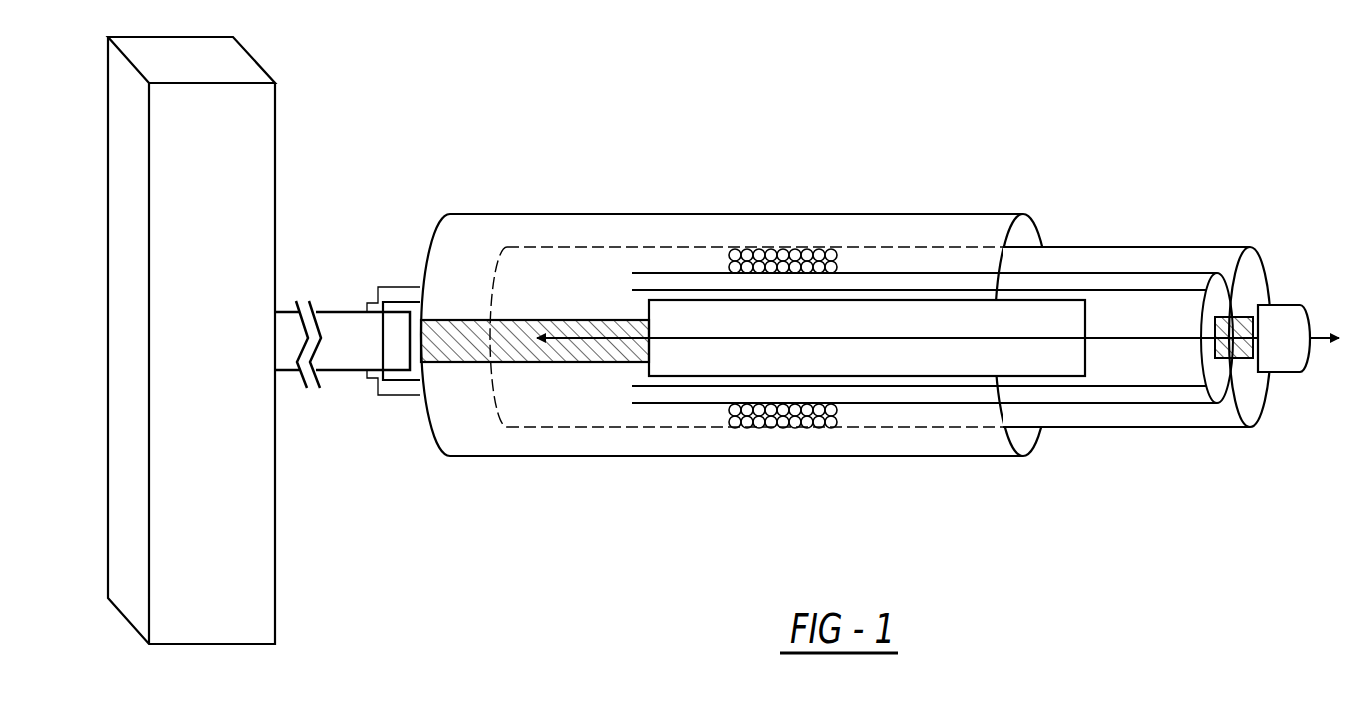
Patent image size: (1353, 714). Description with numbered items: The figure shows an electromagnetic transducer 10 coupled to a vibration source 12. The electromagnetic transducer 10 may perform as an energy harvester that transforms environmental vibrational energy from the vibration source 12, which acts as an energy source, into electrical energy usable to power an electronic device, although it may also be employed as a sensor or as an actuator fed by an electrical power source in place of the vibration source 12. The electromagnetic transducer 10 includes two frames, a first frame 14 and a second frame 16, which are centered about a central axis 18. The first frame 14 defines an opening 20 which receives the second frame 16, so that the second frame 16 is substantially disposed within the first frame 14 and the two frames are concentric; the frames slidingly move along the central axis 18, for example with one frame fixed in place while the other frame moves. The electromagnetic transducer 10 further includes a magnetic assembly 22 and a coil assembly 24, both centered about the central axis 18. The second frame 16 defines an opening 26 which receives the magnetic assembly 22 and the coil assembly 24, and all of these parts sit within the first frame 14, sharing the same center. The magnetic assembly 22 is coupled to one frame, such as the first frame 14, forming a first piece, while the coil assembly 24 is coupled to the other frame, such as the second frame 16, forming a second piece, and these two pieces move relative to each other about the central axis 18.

The electromagnetic transducer 10 is at (859, 338).
The vibration source 12 is at (122, 145).
The first frame 14 is at (610, 214).
The second frame 16 is at (1178, 247).
The central axis 18 is at (1322, 343).
The opening 20 is at (1027, 440).
The magnetic assembly 22 is at (738, 354).
The coil assembly 24 is at (845, 256).
The opening 26 is at (518, 388).